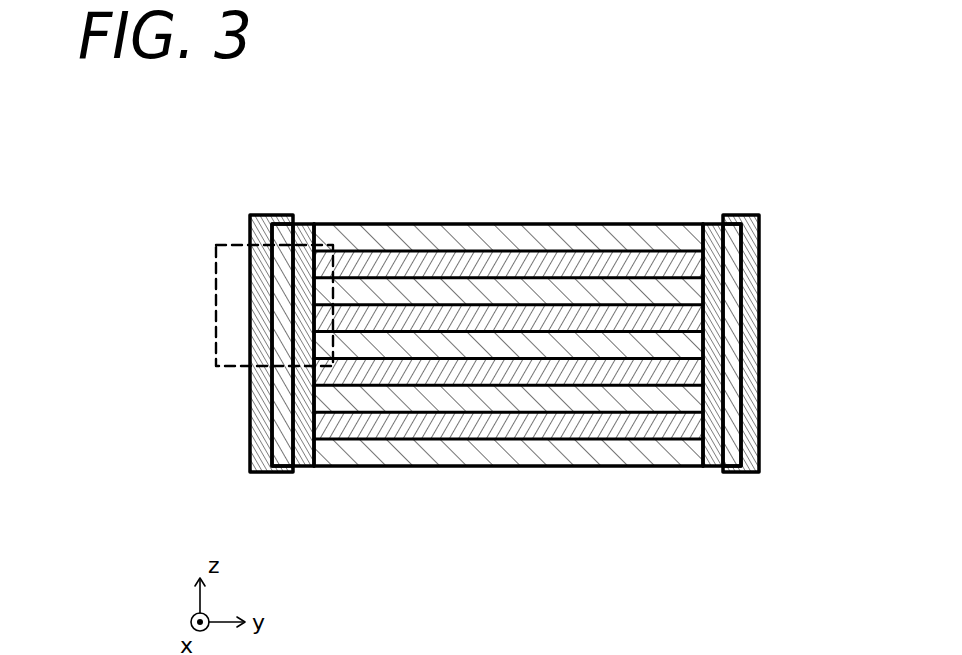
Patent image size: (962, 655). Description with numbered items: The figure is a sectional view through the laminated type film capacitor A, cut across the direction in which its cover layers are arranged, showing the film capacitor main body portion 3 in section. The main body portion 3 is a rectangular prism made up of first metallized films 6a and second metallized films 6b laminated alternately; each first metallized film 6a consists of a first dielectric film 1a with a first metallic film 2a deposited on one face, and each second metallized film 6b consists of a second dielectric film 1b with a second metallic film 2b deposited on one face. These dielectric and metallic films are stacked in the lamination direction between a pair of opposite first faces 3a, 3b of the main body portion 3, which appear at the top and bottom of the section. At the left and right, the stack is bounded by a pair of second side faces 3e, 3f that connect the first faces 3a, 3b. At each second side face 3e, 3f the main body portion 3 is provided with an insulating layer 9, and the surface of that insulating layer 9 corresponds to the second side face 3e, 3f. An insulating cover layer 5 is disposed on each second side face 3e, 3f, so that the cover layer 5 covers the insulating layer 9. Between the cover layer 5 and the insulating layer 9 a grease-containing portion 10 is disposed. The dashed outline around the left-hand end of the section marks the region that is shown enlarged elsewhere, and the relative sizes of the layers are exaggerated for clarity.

The laminated type film capacitor A is at (675, 70).
The film capacitor main body portion 3 is at (635, 92).
The first face 3a is at (342, 214).
The first face 3b is at (528, 467).
The second side face 3e is at (296, 210).
The second side face 3f is at (722, 206).
The first metallized film 6a is at (475, 145).
The second metallized film 6b is at (645, 145).
The first dielectric film 1a is at (483, 447).
The second dielectric film 1b is at (565, 405).
The first metallic film 2a is at (412, 427).
The second metallic film 2b is at (641, 358).
The insulating cover layer 5 is at (265, 428).
The insulating layer 9 is at (302, 452).
The grease-containing portion 10 is at (283, 450).